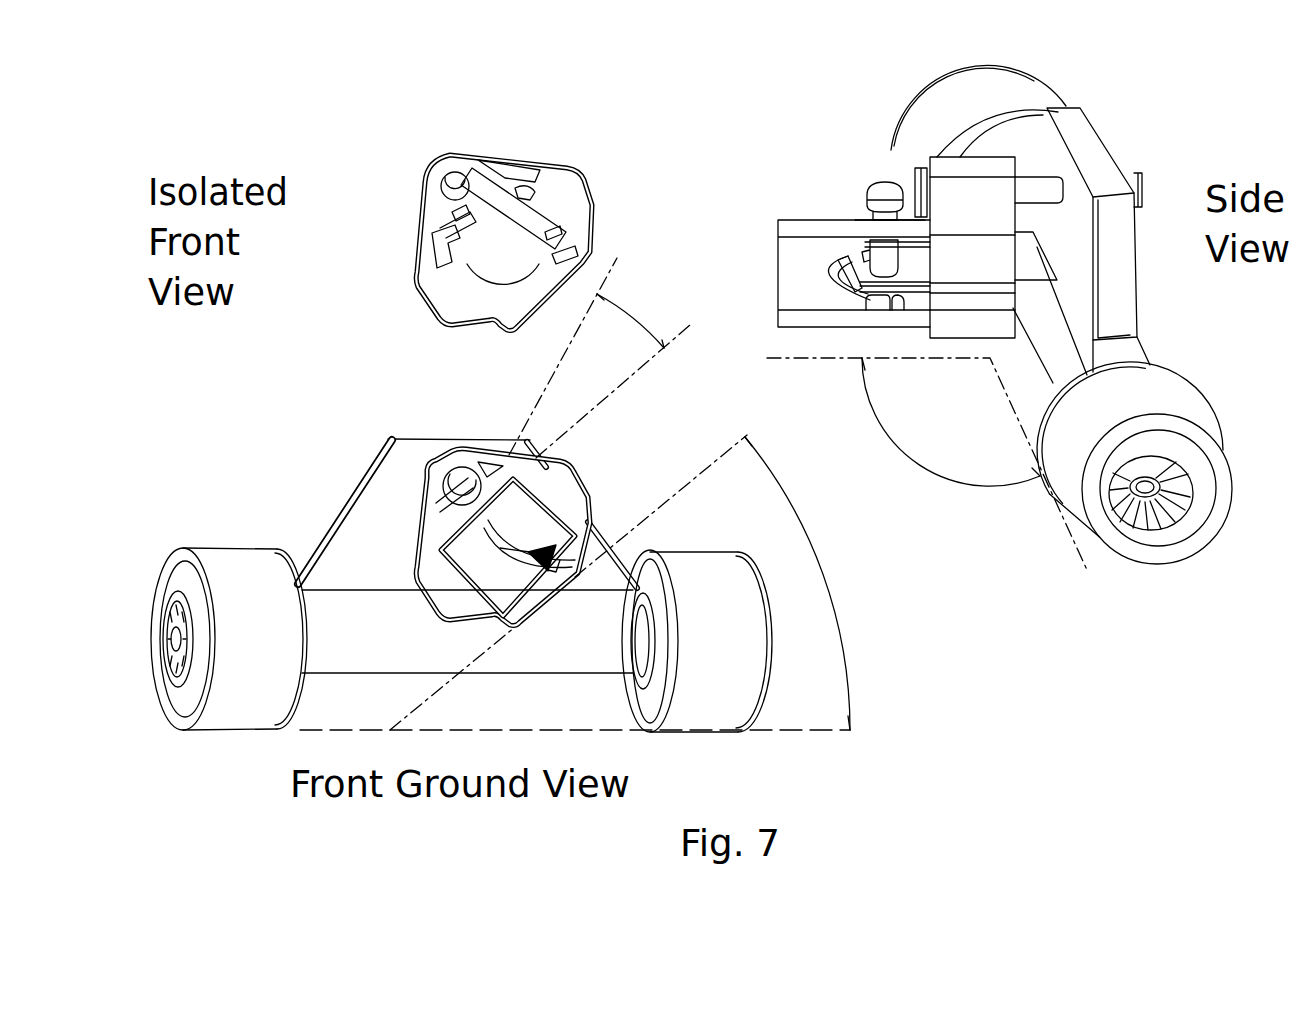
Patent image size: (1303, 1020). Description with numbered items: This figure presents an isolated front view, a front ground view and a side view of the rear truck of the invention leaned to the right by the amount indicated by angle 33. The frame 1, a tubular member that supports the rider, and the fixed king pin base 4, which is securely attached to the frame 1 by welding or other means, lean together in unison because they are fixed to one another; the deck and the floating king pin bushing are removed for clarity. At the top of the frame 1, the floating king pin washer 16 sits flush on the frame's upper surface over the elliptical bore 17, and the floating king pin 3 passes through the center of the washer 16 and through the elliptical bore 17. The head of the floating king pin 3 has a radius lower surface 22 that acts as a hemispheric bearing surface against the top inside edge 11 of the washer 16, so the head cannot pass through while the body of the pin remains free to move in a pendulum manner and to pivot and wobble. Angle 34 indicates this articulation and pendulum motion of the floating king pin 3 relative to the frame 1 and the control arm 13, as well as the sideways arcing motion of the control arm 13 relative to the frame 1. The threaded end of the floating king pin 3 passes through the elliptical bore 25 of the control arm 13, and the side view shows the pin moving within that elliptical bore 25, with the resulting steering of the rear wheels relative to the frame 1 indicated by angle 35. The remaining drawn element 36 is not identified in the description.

The frame 1 is at (520, 187).
The floating king pin 3 is at (510, 232).
The fixed king pin base 4 is at (432, 240).
The top inside edge of floating king pin washer 11 is at (460, 250).
The control arm 13 is at (558, 237).
The floating king pin washer 16 is at (503, 172).
The elliptical bore 17 is at (527, 195).
The radius lower surface 22 is at (448, 162).
The elliptical bore of the control arm 25 is at (863, 267).
The angle 33 is at (620, 582).
The angle 34 is at (599, 358).
The angle 35 is at (927, 464).
The deck strut 36 is at (453, 517).